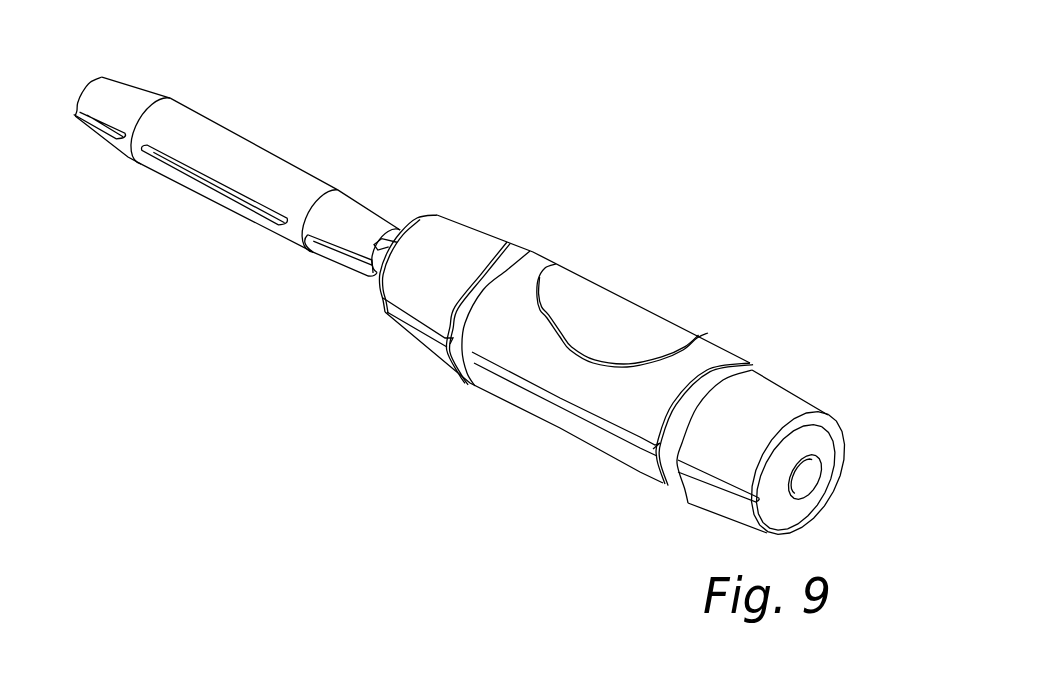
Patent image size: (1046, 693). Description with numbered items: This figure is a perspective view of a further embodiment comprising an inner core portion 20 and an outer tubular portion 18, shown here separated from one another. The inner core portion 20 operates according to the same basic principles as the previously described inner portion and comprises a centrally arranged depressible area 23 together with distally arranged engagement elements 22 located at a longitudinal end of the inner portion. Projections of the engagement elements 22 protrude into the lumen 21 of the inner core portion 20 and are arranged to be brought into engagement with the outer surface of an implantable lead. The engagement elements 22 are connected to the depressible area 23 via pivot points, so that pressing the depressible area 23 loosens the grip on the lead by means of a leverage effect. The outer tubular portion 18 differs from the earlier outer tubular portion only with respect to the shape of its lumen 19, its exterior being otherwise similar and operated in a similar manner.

The outer tubular portion 18 is at (652, 336).
The lumen 19 is at (804, 476).
The inner core portion 20 is at (239, 226).
The lumen 21 is at (384, 250).
The engagement elements 22 is at (360, 226).
The depressible area 23 is at (248, 160).